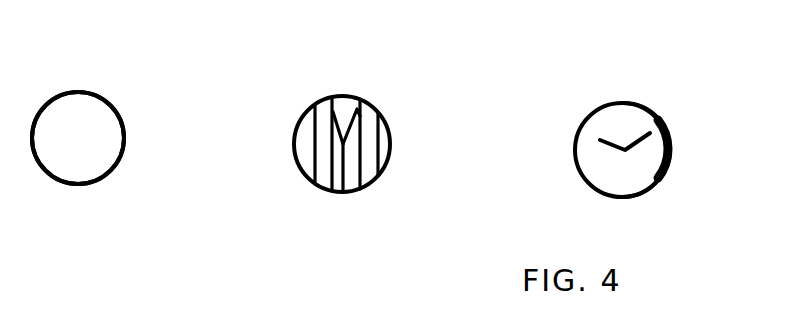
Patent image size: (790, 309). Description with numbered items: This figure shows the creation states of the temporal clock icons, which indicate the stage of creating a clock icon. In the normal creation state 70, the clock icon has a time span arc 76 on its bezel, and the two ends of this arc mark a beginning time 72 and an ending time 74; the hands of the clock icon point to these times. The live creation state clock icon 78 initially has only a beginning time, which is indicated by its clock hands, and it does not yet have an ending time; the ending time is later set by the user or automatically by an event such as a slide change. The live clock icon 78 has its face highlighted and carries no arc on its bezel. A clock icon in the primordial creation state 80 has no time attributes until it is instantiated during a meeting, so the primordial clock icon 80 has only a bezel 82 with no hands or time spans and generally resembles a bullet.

The normal creation state 70 is at (637, 79).
The beginning time 72 is at (658, 118).
The ending time 74 is at (658, 178).
The time span arc 76 is at (669, 145).
The live creation state clock icon 78 is at (358, 86).
The primordial creation state clock icon 80 is at (89, 75).
The bezel 82 is at (111, 98).